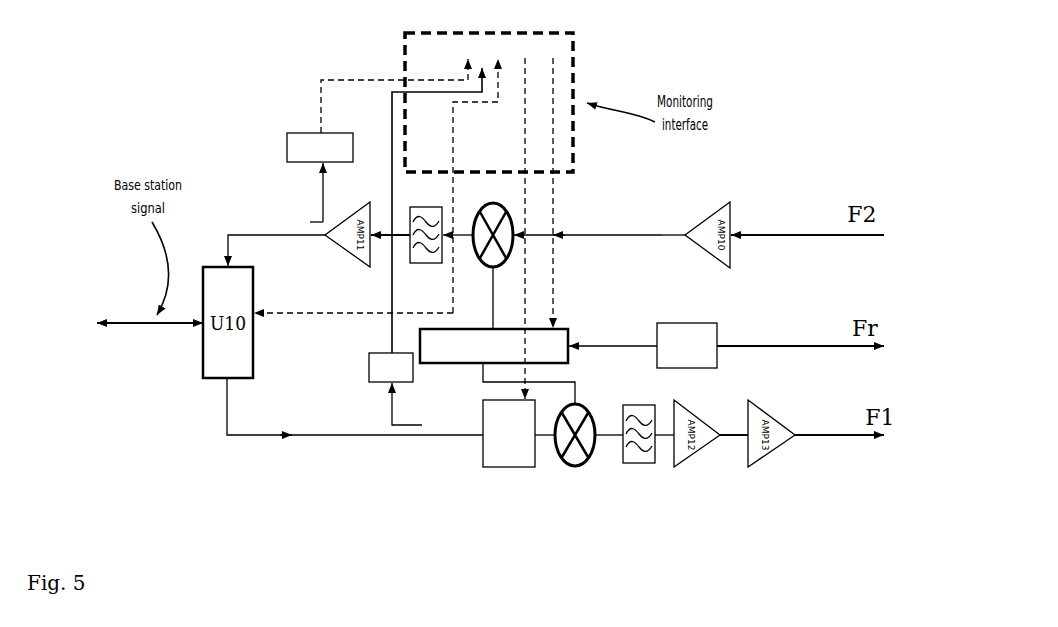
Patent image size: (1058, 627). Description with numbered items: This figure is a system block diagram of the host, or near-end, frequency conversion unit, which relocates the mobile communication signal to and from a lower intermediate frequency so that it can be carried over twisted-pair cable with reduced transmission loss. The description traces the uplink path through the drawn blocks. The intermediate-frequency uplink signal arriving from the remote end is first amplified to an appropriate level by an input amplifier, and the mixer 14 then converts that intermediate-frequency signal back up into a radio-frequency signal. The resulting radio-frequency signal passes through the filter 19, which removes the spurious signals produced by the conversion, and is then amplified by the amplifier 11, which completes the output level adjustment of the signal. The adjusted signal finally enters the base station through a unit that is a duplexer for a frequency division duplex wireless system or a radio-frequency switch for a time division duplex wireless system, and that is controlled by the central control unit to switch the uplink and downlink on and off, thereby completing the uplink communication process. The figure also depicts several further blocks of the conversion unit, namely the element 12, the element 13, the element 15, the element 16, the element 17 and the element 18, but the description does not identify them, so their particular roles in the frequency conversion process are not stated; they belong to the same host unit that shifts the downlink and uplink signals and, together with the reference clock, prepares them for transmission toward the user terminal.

The amplifier 11 is at (309, 104).
The detector (DET) for transmit path 12 is at (367, 361).
The attenuator (ATT) 13 is at (505, 472).
The mixer 14 is at (573, 478).
The IF SAW filter 15 is at (635, 479).
The TCXO reference oscillator 16 is at (719, 323).
The PLL phase-locked loop 17 is at (569, 318).
The mixer (down-conversion) 18 is at (483, 269).
The filter 19 is at (418, 268).